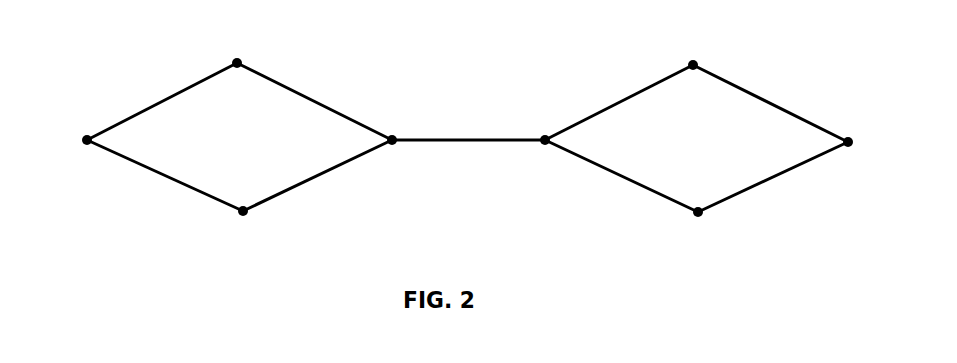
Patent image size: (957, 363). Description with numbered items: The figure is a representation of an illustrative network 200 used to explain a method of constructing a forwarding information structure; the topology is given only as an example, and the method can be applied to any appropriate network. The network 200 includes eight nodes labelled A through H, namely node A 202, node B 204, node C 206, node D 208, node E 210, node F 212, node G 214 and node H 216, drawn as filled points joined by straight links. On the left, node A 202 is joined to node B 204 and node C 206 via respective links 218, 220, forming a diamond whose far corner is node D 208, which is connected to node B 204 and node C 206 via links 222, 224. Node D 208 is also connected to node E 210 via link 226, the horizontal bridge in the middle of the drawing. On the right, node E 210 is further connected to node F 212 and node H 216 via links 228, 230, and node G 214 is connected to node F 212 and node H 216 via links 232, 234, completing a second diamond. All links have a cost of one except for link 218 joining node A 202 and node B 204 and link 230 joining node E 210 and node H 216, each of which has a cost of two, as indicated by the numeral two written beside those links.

The network 200 is at (125, 40).
The node A 202 is at (89, 136).
The node B 204 is at (236, 58).
The node C 206 is at (310, 233).
The node D 208 is at (405, 152).
The node E 210 is at (547, 150).
The node F 212 is at (688, 217).
The node G 214 is at (690, 60).
The node H 216 is at (855, 150).
The link 218 is at (207, 80).
The link 220 is at (182, 188).
The link 222 is at (342, 113).
The link 224 is at (320, 177).
The link 226 is at (481, 139).
The link 228 is at (659, 192).
The link 230 is at (614, 104).
The link 232 is at (780, 177).
The link 234 is at (800, 117).